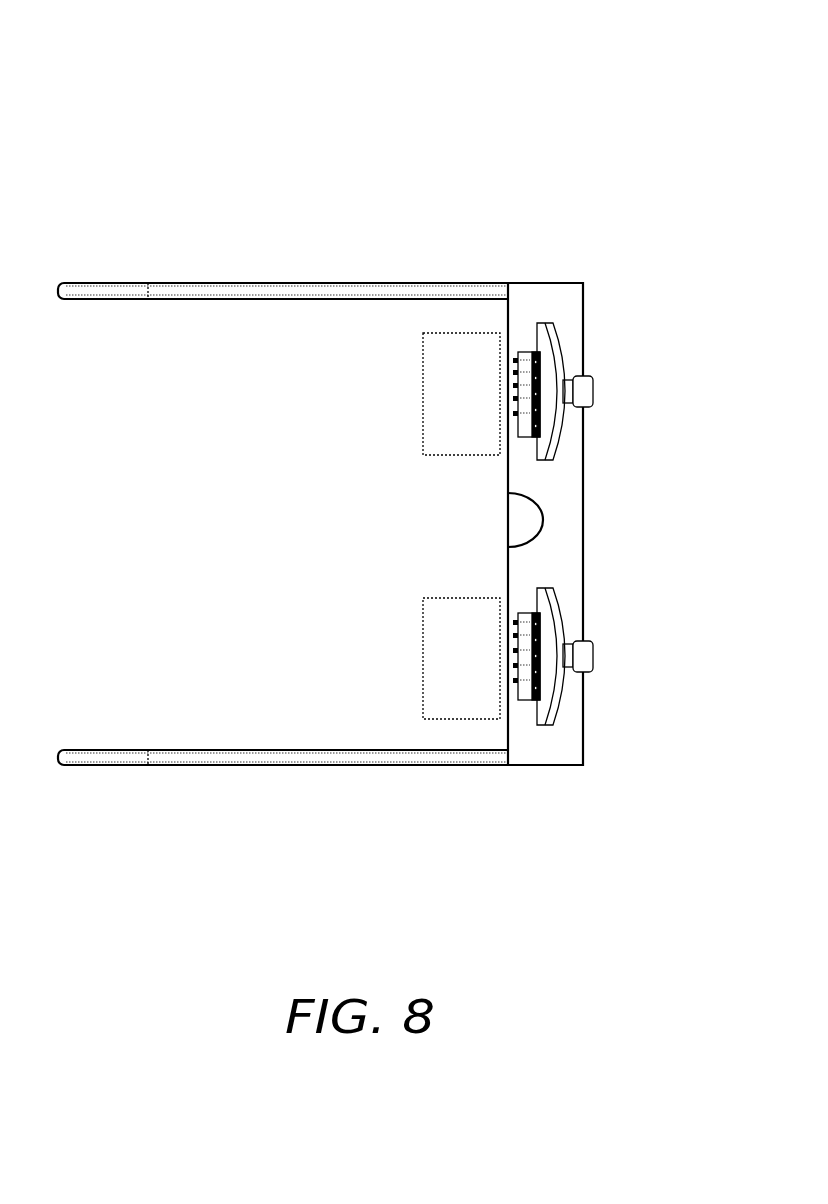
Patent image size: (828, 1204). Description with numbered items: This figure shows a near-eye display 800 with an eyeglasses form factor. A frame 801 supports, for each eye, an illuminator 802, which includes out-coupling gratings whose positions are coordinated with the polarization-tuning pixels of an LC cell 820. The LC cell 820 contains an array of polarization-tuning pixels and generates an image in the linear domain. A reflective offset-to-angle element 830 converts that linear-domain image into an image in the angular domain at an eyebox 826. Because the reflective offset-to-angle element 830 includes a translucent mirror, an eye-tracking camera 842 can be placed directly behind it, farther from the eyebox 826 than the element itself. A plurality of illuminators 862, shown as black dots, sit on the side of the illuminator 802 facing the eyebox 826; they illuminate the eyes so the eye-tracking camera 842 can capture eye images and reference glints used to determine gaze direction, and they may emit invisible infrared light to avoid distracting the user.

The near-eye display 800 is at (347, 124).
The frame 801 is at (443, 293).
The illuminator 802 is at (521, 350).
The LC cell 820 is at (530, 440).
The eyebox 826 is at (482, 404).
The reflective offset-to-angle element 830 is at (553, 322).
The eye-tracking camera 842 is at (597, 390).
The illuminators 862 is at (513, 440).